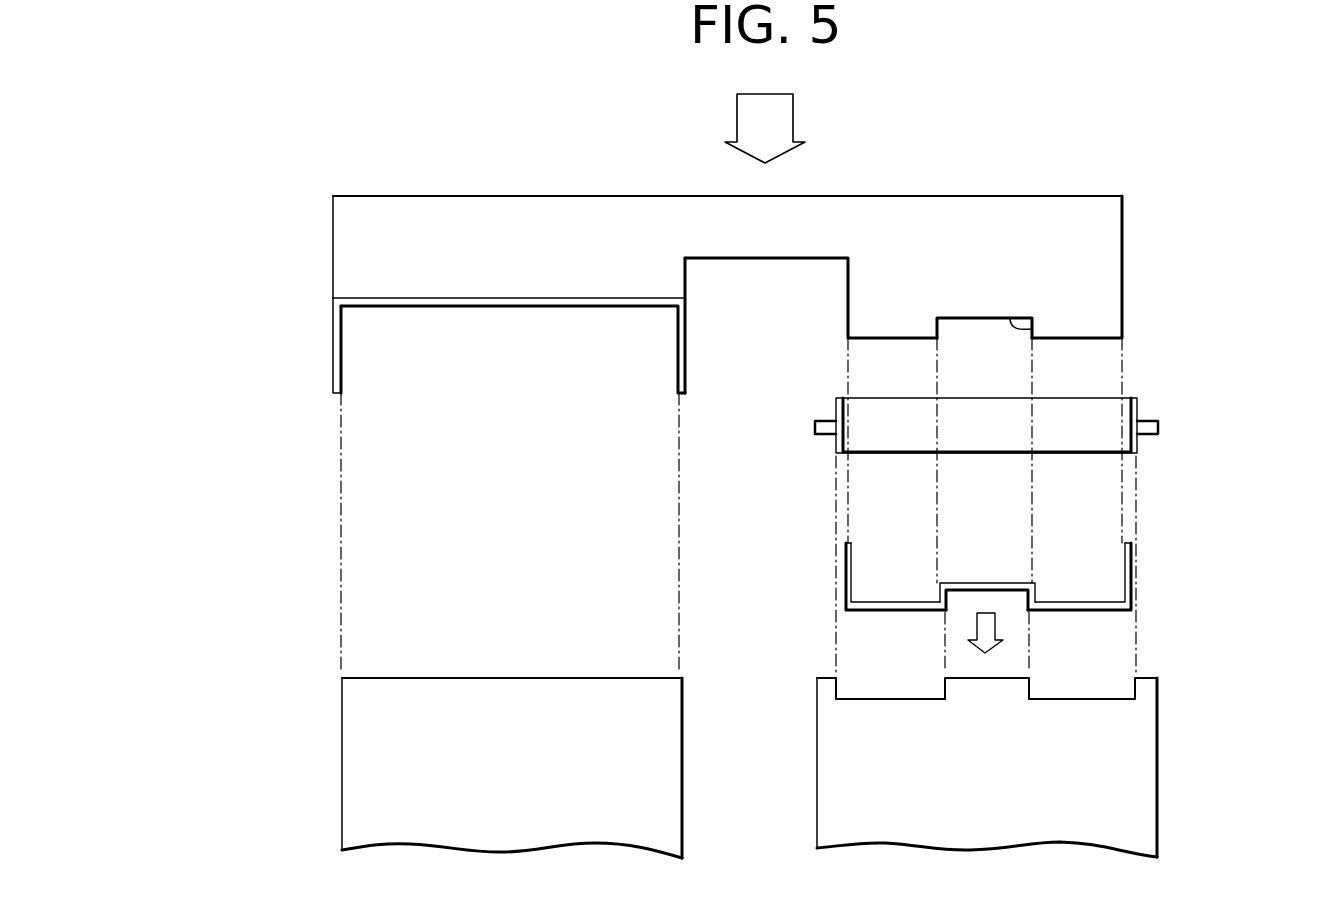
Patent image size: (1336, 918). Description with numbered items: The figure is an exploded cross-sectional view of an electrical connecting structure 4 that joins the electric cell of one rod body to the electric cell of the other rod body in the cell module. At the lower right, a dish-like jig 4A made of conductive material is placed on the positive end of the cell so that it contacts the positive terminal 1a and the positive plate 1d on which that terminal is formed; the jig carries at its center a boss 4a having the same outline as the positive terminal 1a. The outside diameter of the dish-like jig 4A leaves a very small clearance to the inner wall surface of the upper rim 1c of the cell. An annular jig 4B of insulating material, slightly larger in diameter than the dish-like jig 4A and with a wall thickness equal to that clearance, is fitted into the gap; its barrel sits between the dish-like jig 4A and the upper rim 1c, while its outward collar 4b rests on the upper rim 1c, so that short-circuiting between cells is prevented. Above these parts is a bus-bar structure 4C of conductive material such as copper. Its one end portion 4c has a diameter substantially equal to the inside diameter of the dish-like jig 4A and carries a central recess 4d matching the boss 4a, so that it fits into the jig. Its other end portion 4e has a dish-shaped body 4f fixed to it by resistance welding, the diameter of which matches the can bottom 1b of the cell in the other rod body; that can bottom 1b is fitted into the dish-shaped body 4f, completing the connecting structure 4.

The electrical connecting structure 4 is at (1138, 203).
The bus-bar structure 4C is at (1025, 196).
The other end portion 4e is at (345, 282).
The dish-shaped body 4f is at (338, 358).
The one end portion 4c is at (1093, 308).
The recess 4d is at (1035, 330).
The annular jig 4B is at (1137, 408).
The collar 4b is at (1157, 427).
The dish-like jig 4A is at (1133, 557).
The boss 4a is at (985, 583).
The can bottom 1b is at (372, 678).
The positive plate 1d is at (873, 698).
The positive terminal 1a is at (1007, 676).
The upper rim 1c is at (1143, 677).